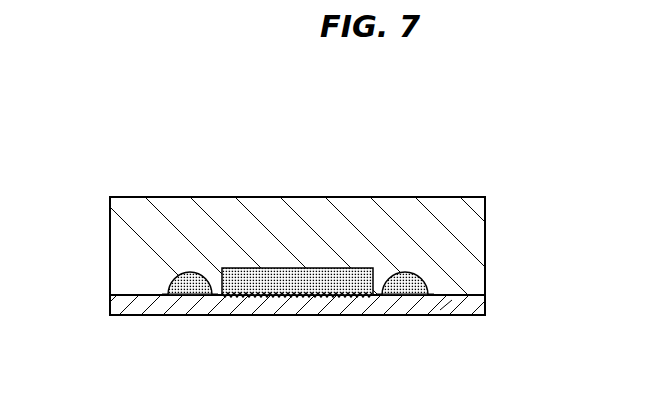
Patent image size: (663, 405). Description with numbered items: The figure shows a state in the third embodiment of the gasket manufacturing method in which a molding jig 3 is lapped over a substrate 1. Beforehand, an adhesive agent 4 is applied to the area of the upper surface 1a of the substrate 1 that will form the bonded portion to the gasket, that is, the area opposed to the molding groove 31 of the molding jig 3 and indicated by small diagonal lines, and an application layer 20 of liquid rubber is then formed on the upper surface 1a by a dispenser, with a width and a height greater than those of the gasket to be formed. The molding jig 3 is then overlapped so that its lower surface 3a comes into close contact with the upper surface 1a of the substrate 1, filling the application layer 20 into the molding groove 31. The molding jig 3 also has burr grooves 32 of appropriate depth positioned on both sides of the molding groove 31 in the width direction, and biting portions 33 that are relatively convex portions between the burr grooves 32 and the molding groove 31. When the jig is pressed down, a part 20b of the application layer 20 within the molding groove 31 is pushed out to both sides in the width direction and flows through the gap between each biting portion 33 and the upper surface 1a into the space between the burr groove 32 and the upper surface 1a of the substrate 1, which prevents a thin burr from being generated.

The substrate 1 is at (156, 311).
The upper surface of the substrate 1a is at (457, 296).
The molding jig 3 is at (455, 239).
The lower surface of the molding jig 3a is at (447, 308).
The adhesive agent 4 is at (265, 292).
The application layer 20 is at (327, 269).
The part of the application layer 20b is at (190, 272).
The molding groove 31 is at (293, 296).
The burr groove 32 is at (170, 292).
The biting portion 33 is at (211, 295).